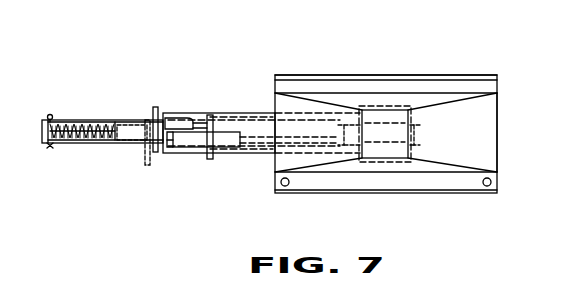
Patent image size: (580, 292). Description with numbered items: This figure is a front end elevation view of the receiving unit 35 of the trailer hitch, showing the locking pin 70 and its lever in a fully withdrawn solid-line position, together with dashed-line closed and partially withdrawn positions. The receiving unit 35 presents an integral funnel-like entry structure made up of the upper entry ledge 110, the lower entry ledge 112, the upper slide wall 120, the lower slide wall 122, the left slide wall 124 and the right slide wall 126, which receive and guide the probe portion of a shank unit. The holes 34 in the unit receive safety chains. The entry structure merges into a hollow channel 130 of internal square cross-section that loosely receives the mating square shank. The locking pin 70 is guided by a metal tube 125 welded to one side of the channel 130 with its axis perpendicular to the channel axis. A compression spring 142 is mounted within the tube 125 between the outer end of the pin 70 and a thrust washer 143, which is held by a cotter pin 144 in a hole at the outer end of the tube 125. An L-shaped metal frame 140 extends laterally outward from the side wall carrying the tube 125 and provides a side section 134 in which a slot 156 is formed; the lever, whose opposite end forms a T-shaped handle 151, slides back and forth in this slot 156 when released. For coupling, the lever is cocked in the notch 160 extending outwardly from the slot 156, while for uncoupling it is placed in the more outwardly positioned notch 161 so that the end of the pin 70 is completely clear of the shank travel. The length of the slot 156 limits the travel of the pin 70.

The receiving unit 35 is at (436, 62).
The upper entry ledge 110 is at (490, 85).
The lower entry ledge 112 is at (433, 182).
The holes 34 is at (290, 184).
The upper slide wall 120 is at (445, 100).
The right slide wall 126 is at (485, 145).
The hollow channel 130 is at (390, 127).
The lower slide wall 122 is at (367, 160).
The L-shaped metal frame 140 is at (252, 112).
The side section 134 is at (230, 113).
The left slide wall 124 is at (297, 135).
The notch 160 is at (190, 118).
The slot 156 is at (196, 150).
The T-shaped handle 151 is at (155, 106).
The notch 161 is at (182, 150).
The metal tube 125 is at (120, 120).
The thrust washer 143 is at (53, 120).
The cotter pin 144 is at (50, 114).
The compression spring 142 is at (82, 142).
The locking pin 70 is at (127, 143).